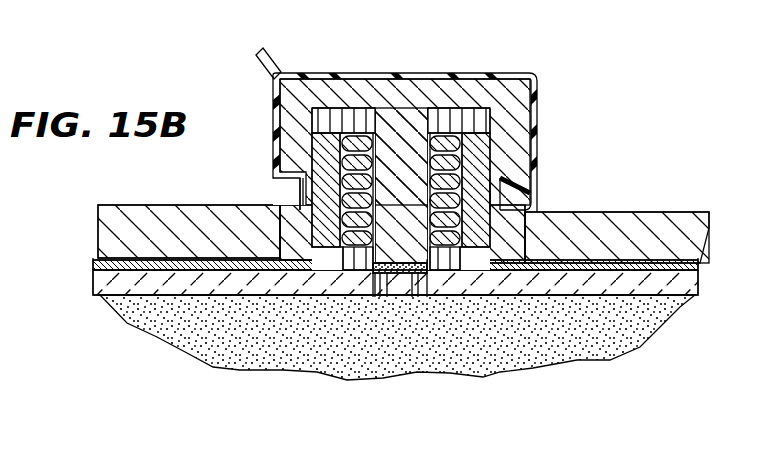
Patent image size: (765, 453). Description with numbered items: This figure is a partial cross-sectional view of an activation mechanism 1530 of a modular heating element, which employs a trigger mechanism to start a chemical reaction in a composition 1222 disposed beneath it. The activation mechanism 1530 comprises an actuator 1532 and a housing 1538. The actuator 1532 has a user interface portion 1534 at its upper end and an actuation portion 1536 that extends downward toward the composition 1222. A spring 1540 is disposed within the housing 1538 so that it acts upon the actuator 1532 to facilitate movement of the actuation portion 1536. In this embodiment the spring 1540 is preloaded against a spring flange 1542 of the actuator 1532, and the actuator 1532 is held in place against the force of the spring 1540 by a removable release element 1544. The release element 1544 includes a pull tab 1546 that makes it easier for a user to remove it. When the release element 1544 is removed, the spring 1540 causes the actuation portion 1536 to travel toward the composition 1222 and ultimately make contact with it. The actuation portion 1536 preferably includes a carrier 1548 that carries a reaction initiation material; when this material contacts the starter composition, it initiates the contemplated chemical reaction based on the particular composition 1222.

The activation mechanism 1530 is at (577, 132).
The actuator 1532 is at (400, 107).
The user interface portion 1534 is at (332, 92).
The actuation portion 1536 is at (405, 248).
The housing 1538 is at (513, 232).
The spring 1540 is at (298, 190).
The spring flange 1542 is at (340, 237).
The release element 1544 is at (273, 108).
The pull tab 1546 is at (258, 50).
The carrier 1548 is at (408, 276).
The composition 1222 is at (363, 357).